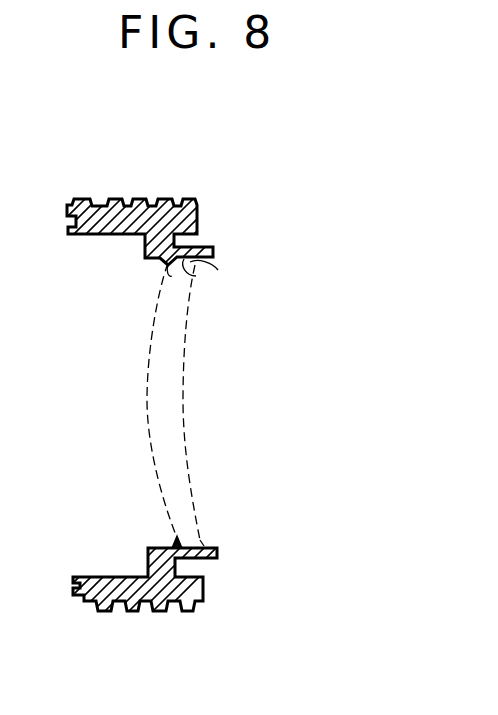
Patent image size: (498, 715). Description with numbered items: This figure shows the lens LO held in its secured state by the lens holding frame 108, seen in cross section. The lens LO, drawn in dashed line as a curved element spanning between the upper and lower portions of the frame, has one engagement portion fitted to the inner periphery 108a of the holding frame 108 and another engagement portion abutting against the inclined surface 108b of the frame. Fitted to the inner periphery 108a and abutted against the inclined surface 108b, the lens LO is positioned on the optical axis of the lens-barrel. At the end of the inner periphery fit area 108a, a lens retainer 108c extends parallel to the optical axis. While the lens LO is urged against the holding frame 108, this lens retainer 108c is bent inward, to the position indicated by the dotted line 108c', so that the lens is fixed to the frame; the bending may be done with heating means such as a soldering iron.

The lens holding frame 108 is at (82, 199).
The inner periphery 108a is at (190, 265).
The inclined surface 108b is at (168, 272).
The lens retainer 108c is at (247, 228).
The lens retainer in bent state 108c' is at (299, 241).
The lens Lo is at (153, 352).